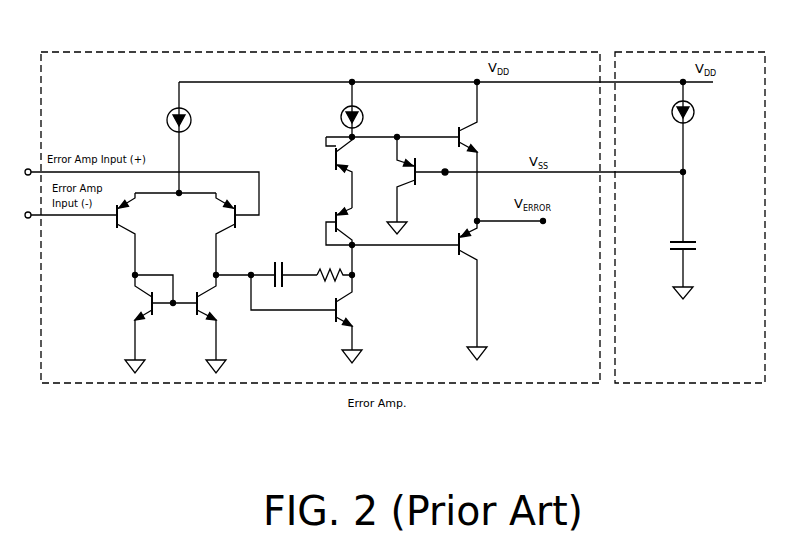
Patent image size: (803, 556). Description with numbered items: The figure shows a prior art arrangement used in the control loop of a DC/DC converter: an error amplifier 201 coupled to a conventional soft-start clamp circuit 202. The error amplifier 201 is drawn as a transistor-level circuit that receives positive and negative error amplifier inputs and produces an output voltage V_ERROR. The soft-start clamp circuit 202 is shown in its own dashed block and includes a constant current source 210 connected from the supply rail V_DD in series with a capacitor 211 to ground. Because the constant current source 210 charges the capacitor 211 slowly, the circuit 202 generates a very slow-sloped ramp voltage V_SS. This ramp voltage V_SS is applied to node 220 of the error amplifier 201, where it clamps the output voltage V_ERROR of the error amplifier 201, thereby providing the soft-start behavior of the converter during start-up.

The error amplifier 201 is at (336, 51).
The soft-start clamp circuit 202 is at (671, 51).
The constant current source 210 is at (695, 113).
The capacitor 211 is at (690, 251).
The node 220 is at (445, 175).